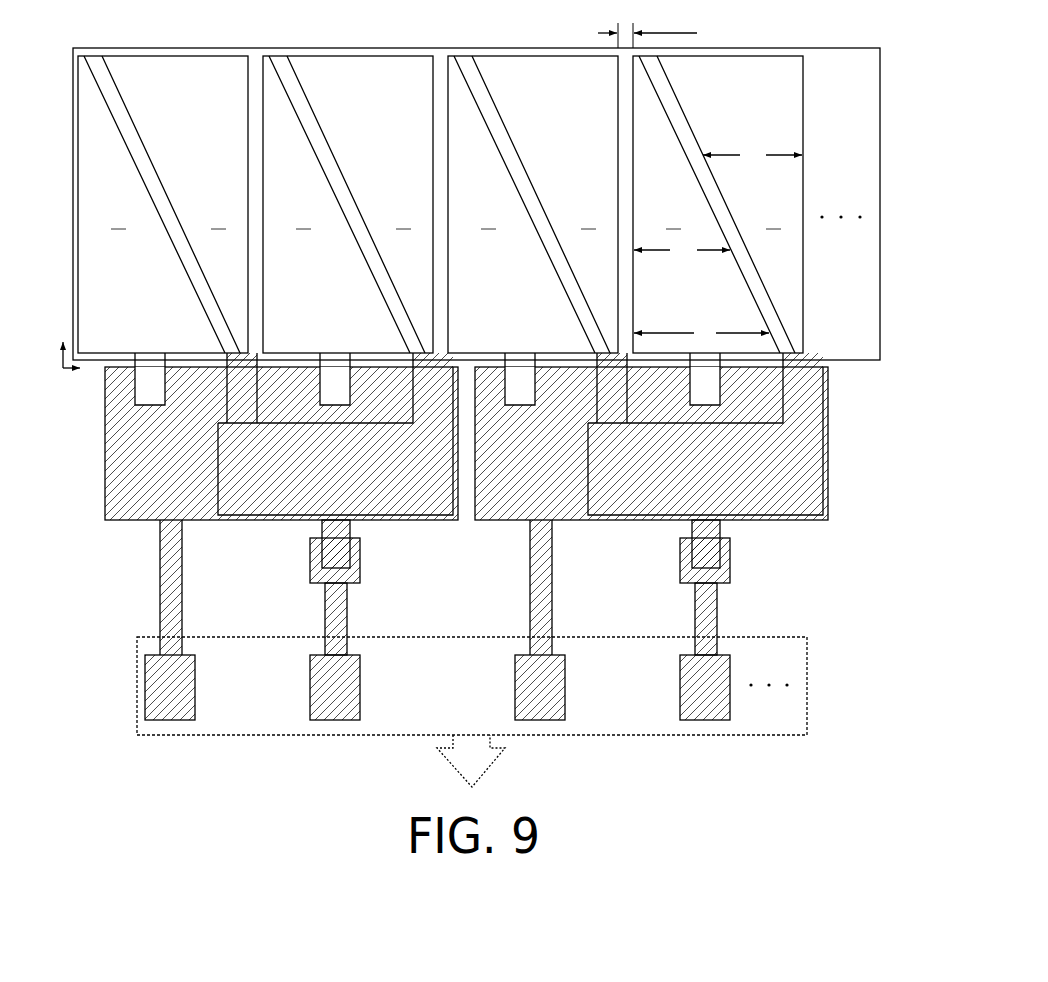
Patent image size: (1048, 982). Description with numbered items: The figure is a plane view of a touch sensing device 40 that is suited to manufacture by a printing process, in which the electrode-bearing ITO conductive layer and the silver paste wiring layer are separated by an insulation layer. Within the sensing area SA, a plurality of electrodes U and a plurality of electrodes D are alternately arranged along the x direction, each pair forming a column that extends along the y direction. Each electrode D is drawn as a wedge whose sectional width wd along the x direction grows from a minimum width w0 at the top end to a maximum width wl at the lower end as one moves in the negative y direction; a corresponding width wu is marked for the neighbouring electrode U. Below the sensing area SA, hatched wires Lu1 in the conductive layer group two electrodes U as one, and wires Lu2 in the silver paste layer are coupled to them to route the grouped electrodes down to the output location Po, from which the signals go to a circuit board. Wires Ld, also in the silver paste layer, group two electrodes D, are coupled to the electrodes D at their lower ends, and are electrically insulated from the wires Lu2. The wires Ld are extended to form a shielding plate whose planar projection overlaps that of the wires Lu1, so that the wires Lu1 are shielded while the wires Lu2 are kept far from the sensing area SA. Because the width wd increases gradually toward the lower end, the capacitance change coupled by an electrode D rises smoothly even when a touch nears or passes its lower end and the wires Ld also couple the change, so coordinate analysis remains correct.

The touch sensing device 40 is at (955, 84).
The sensing area SA is at (880, 253).
The electrodes D is at (432, 204).
The electrodes U is at (448, 204).
The minimum width w0 is at (633, 35).
The width of electrode U wu is at (752, 155).
The sectional width of electrodes D wd is at (682, 250).
The maximum width wl is at (701, 333).
The wires Lu1 is at (218, 457).
The wires Lu2 is at (348, 595).
The wires Ld is at (182, 597).
The output location Po is at (808, 648).
The x direction x is at (72, 378).
The y direction y is at (59, 341).